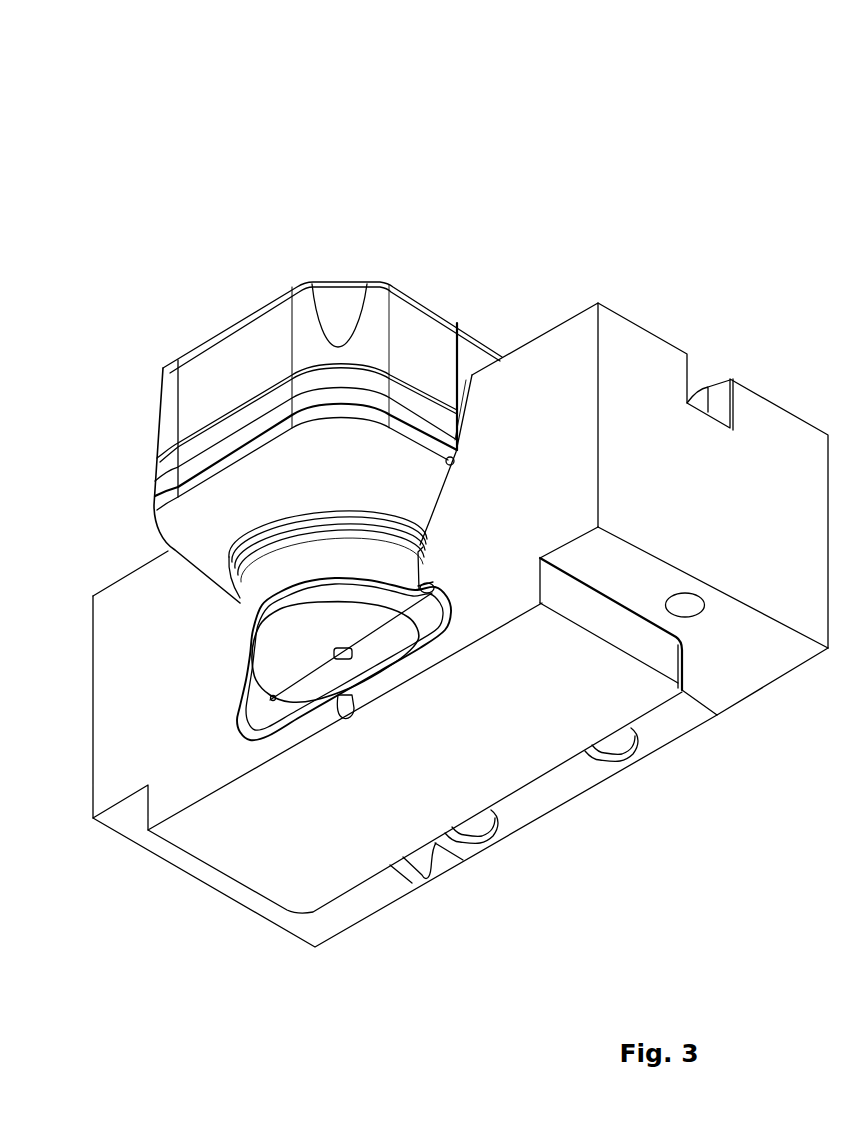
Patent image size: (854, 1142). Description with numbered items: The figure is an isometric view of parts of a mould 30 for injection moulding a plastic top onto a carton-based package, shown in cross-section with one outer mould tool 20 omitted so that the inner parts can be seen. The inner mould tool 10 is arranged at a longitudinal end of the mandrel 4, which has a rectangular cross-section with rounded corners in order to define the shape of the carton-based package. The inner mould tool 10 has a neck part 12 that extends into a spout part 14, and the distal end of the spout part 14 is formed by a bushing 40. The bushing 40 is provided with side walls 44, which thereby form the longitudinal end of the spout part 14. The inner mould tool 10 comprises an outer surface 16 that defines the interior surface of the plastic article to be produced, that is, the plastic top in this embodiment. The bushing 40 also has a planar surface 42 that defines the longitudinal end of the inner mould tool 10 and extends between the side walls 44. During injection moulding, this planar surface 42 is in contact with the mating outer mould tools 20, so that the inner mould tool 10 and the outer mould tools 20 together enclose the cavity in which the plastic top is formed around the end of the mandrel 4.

The mandrel 4 is at (335, 295).
The inner mould tool 10 is at (200, 611).
The neck part 12 is at (192, 513).
The spout part 14 is at (393, 565).
The outer surface 16 is at (326, 494).
The outer mould tool 20 is at (545, 350).
The mould 30 is at (486, 148).
The bushing 40 is at (290, 662).
The planar surface 42 is at (297, 656).
The side walls 44 is at (422, 586).